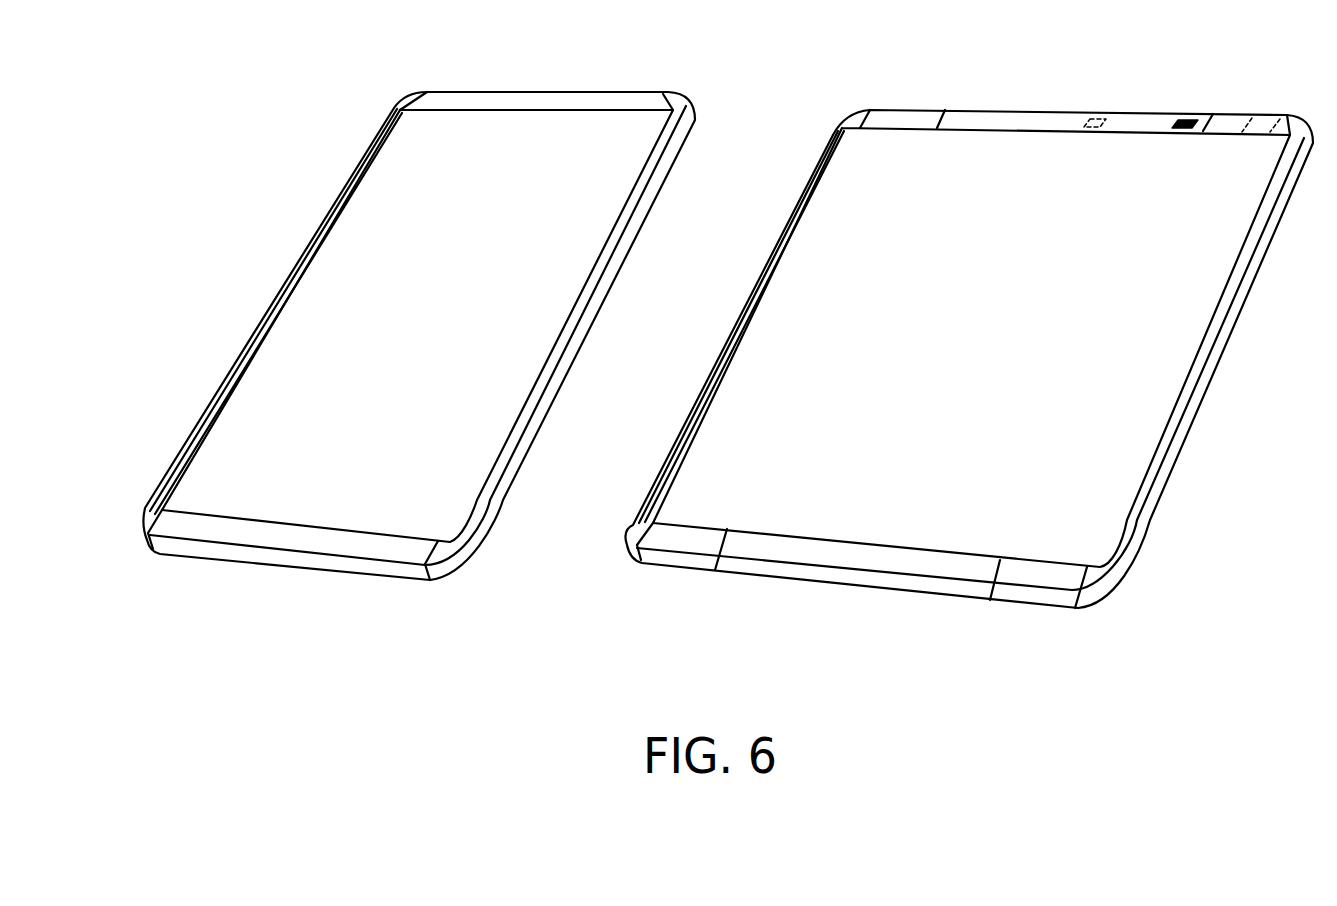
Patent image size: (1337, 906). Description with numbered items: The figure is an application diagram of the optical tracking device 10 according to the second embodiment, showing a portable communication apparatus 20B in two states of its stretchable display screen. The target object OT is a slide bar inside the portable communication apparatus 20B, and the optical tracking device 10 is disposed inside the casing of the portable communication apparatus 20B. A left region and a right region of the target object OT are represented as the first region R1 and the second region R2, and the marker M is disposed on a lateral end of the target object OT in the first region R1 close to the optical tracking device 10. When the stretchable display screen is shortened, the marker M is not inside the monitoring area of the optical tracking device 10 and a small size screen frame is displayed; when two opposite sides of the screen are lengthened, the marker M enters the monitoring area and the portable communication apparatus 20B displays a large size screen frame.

The portable communication apparatus 20B is at (393, 163).
The target object OT is at (903, 118).
The optical tracking device 10 is at (1100, 114).
The marker M is at (1188, 116).
The first region R1 is at (1224, 128).
The second region R2 is at (1264, 134).